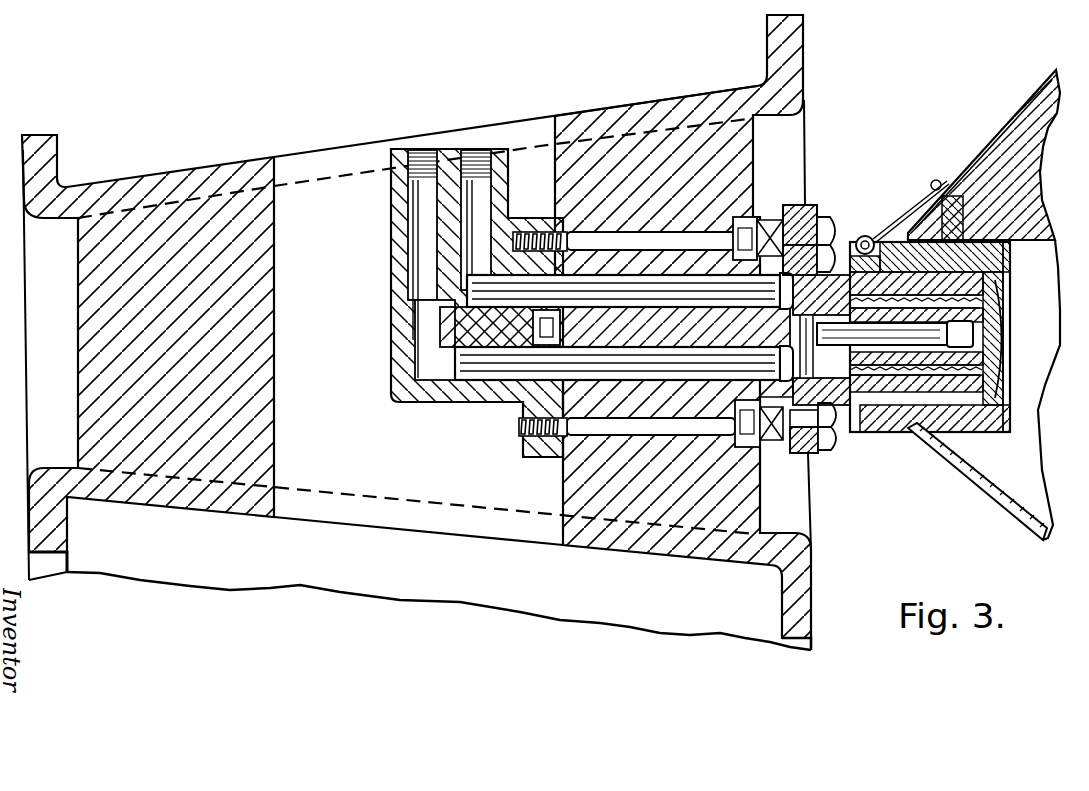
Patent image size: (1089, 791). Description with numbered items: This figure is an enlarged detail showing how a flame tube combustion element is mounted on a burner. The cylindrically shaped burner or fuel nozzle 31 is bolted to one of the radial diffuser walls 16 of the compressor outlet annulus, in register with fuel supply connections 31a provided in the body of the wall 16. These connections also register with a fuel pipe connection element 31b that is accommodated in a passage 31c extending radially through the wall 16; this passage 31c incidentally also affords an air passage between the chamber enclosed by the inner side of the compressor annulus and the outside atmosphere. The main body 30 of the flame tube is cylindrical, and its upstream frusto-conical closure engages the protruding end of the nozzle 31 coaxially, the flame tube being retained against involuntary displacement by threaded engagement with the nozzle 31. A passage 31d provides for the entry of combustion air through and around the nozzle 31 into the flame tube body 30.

The diffuser wall 16 is at (752, 482).
The main body of flame tube 30 is at (988, 143).
The burner or fuel nozzle 31 is at (853, 405).
The fuel supply connections 31a is at (550, 372).
The fuel pipe connection element 31b is at (401, 272).
The passage 31c is at (368, 435).
The passage 31d is at (912, 400).